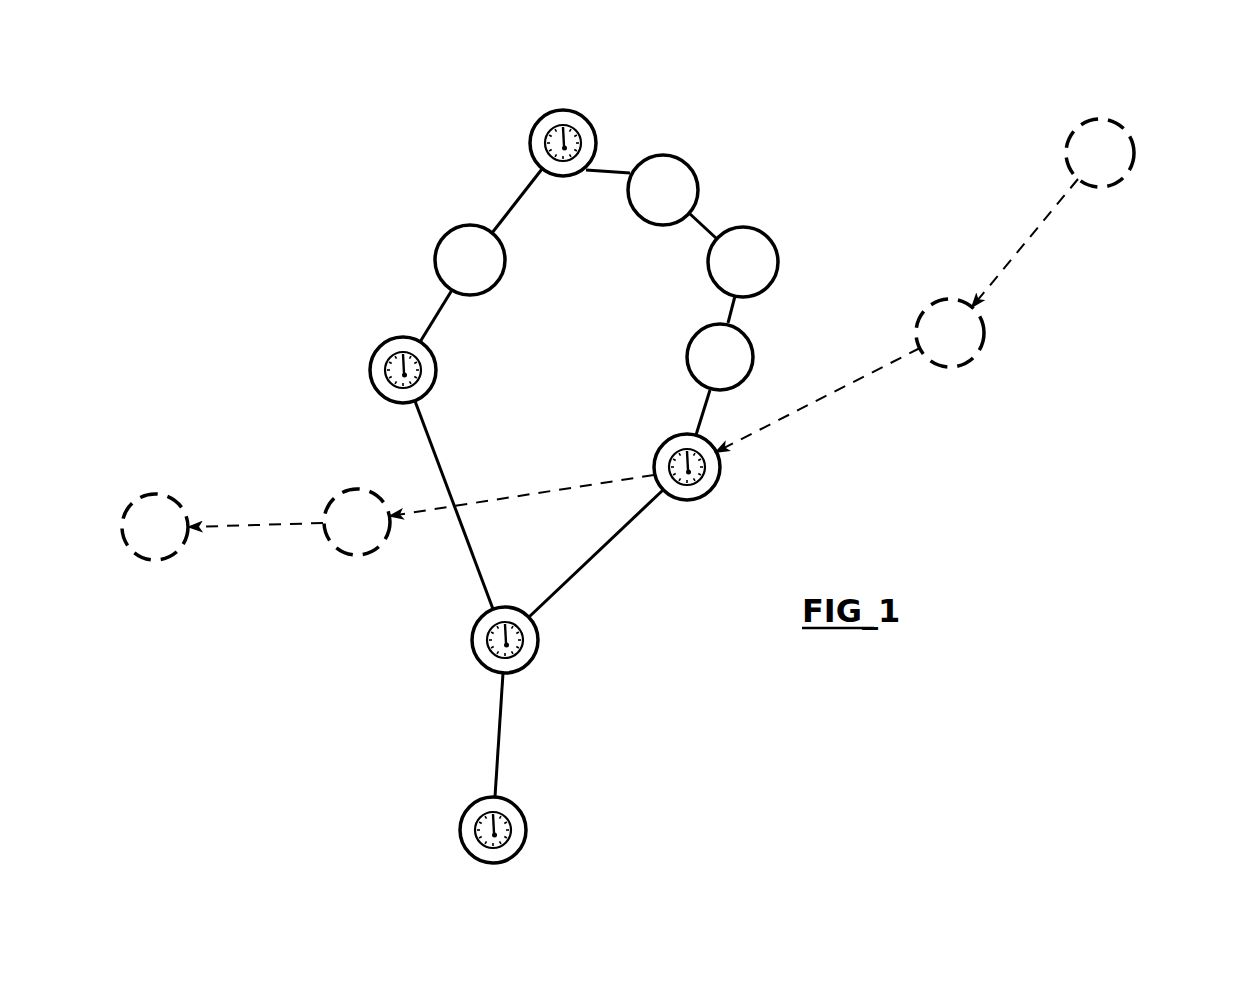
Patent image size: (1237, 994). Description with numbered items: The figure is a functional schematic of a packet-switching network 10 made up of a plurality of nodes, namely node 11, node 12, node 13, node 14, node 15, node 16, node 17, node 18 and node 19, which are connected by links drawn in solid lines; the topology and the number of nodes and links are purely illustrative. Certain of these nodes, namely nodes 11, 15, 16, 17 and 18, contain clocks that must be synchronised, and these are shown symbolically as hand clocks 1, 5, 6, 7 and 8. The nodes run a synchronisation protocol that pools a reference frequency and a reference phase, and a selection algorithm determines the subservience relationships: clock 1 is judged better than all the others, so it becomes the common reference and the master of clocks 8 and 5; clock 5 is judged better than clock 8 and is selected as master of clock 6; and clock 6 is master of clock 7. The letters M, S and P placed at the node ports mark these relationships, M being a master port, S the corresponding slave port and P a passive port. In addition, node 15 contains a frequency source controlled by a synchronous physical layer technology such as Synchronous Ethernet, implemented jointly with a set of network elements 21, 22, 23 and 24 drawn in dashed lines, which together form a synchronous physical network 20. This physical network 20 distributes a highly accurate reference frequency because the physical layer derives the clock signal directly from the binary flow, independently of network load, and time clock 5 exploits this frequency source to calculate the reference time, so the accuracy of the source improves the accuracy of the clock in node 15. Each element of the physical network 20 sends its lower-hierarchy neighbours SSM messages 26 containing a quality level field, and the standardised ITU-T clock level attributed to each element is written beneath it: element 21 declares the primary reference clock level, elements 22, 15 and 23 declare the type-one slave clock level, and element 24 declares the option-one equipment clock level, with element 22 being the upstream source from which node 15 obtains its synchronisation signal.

The time clock 1 is at (567, 126).
The time clock 5 is at (669, 462).
The time clock 6 is at (523, 651).
The time clock 7 is at (478, 818).
The time clock 8 is at (385, 363).
The packet-switching network 10 is at (632, 105).
The node 11 is at (540, 118).
The node 12 is at (676, 157).
The node 13 is at (770, 236).
The node 14 is at (753, 349).
The node 15 is at (668, 437).
The node 16 is at (540, 632).
The node 17 is at (520, 809).
The node 18 is at (390, 340).
The node 19 is at (442, 233).
The synchronous physical network 20 is at (1108, 296).
The network element 21 is at (1083, 119).
The network element 22 is at (934, 300).
The network element 23 is at (330, 494).
The network element 24 is at (136, 495).
The SSM messages 26 is at (836, 400).